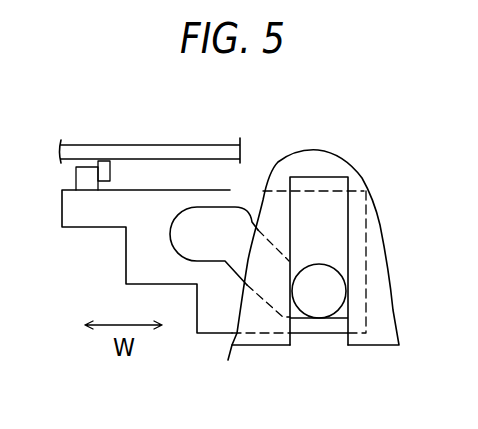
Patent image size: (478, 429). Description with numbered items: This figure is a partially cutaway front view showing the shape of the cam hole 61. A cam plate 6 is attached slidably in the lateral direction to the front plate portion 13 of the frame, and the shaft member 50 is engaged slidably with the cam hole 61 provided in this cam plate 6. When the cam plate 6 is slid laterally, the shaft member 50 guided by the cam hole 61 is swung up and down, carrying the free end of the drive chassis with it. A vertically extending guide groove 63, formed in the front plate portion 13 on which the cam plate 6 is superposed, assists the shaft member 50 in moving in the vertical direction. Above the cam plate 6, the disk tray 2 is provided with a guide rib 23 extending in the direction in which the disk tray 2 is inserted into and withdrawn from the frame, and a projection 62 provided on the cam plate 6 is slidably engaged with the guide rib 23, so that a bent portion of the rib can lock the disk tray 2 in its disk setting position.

The disk tray 2 is at (145, 145).
The projection 62 is at (75, 180).
The guide rib 23 is at (110, 167).
The cam plate 6 is at (212, 328).
The cam hole 61 is at (207, 223).
The guide groove 63 is at (340, 218).
The shaft member 50 is at (322, 306).
The front plate portion 13 is at (387, 313).